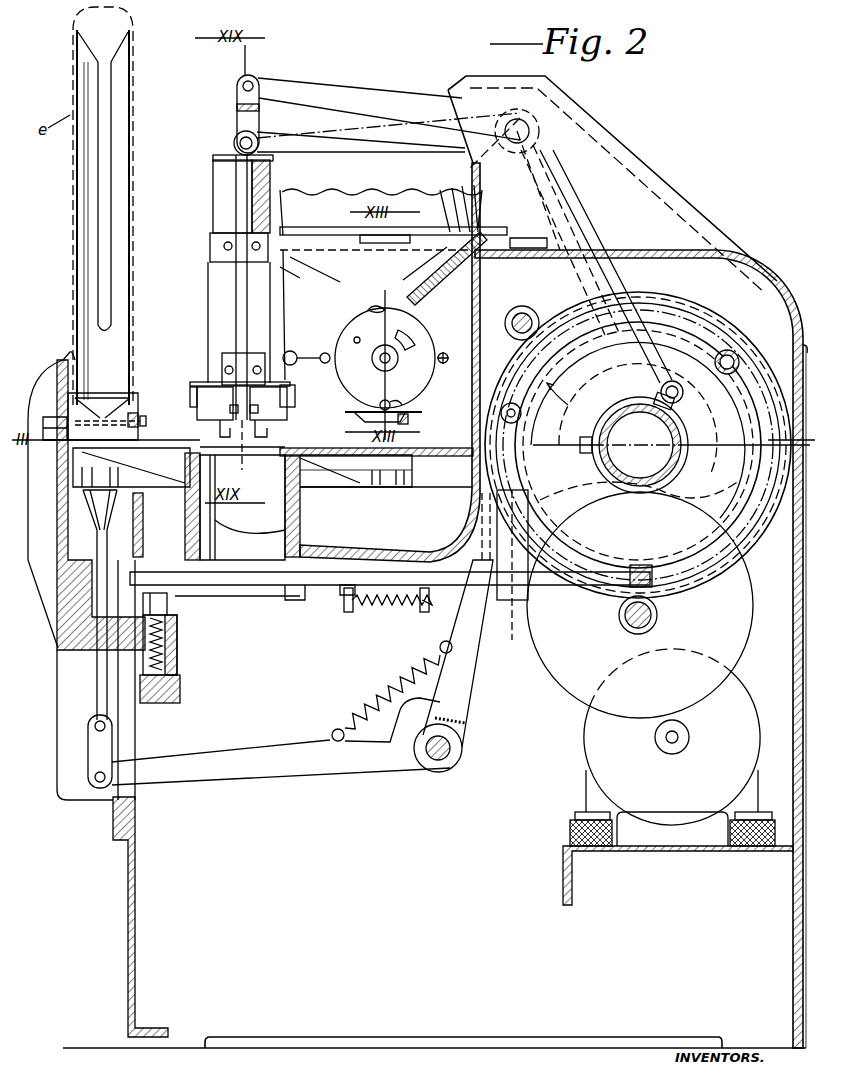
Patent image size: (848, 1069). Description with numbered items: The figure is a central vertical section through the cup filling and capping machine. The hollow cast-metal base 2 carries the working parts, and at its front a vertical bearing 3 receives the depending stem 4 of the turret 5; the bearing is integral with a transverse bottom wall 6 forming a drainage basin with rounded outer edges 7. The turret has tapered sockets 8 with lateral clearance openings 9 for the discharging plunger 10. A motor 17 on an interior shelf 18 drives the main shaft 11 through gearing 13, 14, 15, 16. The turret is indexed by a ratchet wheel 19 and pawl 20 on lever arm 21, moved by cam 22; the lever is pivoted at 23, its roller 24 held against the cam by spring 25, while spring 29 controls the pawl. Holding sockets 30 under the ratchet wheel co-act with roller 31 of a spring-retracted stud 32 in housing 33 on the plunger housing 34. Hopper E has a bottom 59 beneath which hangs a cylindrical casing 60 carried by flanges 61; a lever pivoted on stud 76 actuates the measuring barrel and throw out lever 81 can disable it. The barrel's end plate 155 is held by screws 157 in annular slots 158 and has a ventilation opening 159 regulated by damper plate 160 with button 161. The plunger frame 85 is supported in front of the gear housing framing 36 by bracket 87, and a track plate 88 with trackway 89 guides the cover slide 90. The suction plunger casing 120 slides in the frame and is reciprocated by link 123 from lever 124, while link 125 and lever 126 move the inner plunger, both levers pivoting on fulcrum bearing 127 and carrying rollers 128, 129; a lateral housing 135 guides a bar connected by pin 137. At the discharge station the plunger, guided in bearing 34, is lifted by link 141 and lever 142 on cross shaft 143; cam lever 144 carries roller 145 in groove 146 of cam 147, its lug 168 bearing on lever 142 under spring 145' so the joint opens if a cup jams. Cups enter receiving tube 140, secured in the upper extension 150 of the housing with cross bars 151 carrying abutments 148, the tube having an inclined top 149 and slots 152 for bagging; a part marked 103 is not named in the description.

The base 2 is at (418, 605).
The bearing 3 is at (300, 508).
The central depending stem 4 is at (242, 507).
The turret 5 is at (310, 450).
The bottom wall 6 is at (350, 555).
The outer edges 7 is at (356, 491).
The tapered sockets 8 is at (272, 467).
The lateral clearance openings 9 is at (115, 476).
The discharging plunger 10 is at (115, 500).
The main transverse shaft 11 is at (660, 430).
The gear 13 is at (745, 545).
The gear 14 is at (660, 615).
The gear 15 is at (748, 615).
The gear 16 is at (690, 735).
The motor 17 is at (672, 737).
The interior supporting shelf 18 is at (683, 853).
The ratchet wheel 19 is at (318, 582).
The pawl 20 is at (360, 572).
The lever arm 21 is at (578, 578).
The cam 22 is at (720, 518).
The pivot 23 is at (510, 605).
The terminal roller 24 is at (640, 566).
The spring 25 is at (425, 590).
The spring 29 is at (375, 610).
The holding sockets 30 is at (280, 598).
The roller 31 is at (156, 595).
The spring retracted stud 32 is at (170, 650).
The supporting housing 33 is at (178, 683).
The discharge plunger housing 34 is at (75, 625).
The gear housing framing 36 is at (520, 310).
The hopper bottom 59 is at (383, 268).
The short cylindrical casing 60 is at (368, 310).
The flanges 61 is at (372, 240).
The stud 76 is at (535, 300).
The throw out lever 81 is at (298, 365).
The plunger frame 85 is at (215, 268).
The bracket 87 is at (283, 275).
The horizontal track plate 88 is at (295, 395).
The flanged trackway 89 is at (200, 395).
The cover slide 90 is at (218, 404).
The plate 103 is at (250, 441).
The outer tubular casing 120 is at (230, 200).
The link 123 is at (238, 114).
The lever 124 is at (389, 109).
The link 125 is at (233, 143).
The lever 126 is at (388, 132).
The fulcrum bearing 127 is at (530, 135).
The terminal roller 128 is at (662, 390).
The terminal roller 129 is at (735, 350).
The lateral housing 135 is at (236, 294).
The pin 137 is at (232, 162).
The receiving cylinder 140 is at (85, 286).
The link 141 is at (98, 752).
The lever 142 is at (281, 741).
The cross shaft 143 is at (450, 762).
The cam lever 144 is at (455, 686).
The roller 145 is at (539, 407).
The spring 145' is at (398, 685).
The cam groove 146 is at (100, 403).
The cam 147 is at (146, 432).
The stop abutments 148 is at (133, 413).
The inclined top 149 is at (85, 48).
The upper extension 150 is at (63, 358).
The cross bars 151 is at (140, 420).
The slots 152 is at (100, 184).
The closing end plate 155 is at (425, 340).
The screws 157 is at (383, 404).
The annular slots 158 is at (410, 418).
The segmental opening 159 is at (405, 335).
The regulating damper plate 160 is at (306, 351).
The button 161 is at (355, 338).
The extended lug 168 is at (415, 710).
The hopper E is at (430, 190).